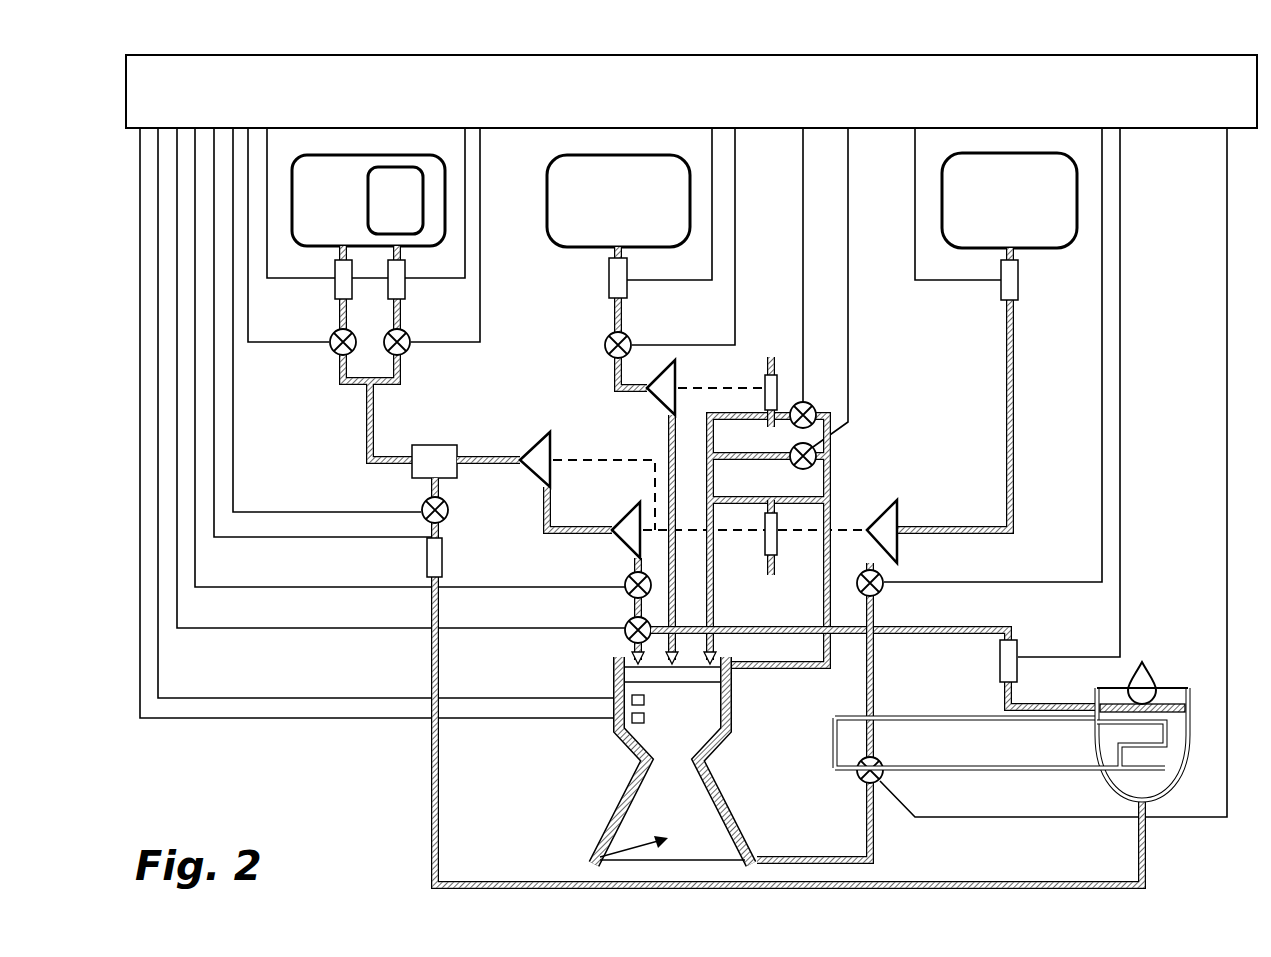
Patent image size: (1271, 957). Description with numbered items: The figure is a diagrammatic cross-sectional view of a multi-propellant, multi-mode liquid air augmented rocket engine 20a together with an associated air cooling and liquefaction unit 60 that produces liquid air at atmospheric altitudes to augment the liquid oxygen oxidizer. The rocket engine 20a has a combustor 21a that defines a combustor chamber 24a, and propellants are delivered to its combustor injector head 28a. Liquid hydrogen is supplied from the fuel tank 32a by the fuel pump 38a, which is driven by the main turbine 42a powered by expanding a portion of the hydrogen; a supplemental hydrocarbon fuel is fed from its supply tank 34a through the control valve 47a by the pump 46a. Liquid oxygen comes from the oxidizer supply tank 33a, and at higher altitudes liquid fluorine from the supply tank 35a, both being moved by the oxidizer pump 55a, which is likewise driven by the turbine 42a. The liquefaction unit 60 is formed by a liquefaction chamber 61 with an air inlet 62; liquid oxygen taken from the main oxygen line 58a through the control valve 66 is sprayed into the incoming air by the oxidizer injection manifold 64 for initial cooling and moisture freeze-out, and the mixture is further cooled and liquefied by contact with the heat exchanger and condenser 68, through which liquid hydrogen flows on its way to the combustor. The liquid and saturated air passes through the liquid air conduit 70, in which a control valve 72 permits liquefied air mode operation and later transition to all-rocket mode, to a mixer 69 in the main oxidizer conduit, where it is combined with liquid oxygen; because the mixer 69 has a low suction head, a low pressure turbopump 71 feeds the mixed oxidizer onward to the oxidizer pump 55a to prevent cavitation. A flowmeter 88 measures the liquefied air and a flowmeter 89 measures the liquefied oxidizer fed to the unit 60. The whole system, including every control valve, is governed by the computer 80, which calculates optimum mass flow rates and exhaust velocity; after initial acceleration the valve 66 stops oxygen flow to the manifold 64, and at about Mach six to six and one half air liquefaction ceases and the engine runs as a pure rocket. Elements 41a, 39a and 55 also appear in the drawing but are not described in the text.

The computer 80 is at (704, 100).
The oxidizer supply tank 33a is at (346, 209).
The liquid fluorine supply tank 35a is at (418, 204).
The supplemental fuel supply tank 34a is at (660, 212).
The fuel tank 32a is at (1043, 212).
The control valve 47a is at (610, 334).
The pump 46a is at (657, 398).
The mixer 69 is at (426, 460).
The liquid air conduit 70 is at (432, 487).
The control valve 72 is at (448, 508).
The flowmeter 88 is at (428, 558).
The low pressure turbopump 71 is at (523, 487).
The oxidizer pump 55a is at (633, 518).
The main oxygen line 58a is at (632, 612).
The control valve 66 is at (624, 630).
The manifold 41a is at (830, 510).
The main turbine 42a is at (777, 555).
The conduit 55 is at (975, 632).
The flowmeter 89 is at (1000, 668).
The fuel pump 38a is at (888, 522).
The conduit 39a is at (868, 830).
The combustor 21a is at (600, 667).
The combustor injector head 28a is at (668, 673).
The combustor chamber 24a is at (680, 722).
The rocket engine 20a is at (653, 756).
The air cooling and liquefaction unit 60 is at (1111, 695).
The heat exchanger and condenser 68 is at (1182, 743).
The liquefaction chamber 61 is at (1093, 695).
The air inlet 62 is at (1173, 688).
The oxidizer injection manifold 64 is at (1165, 688).